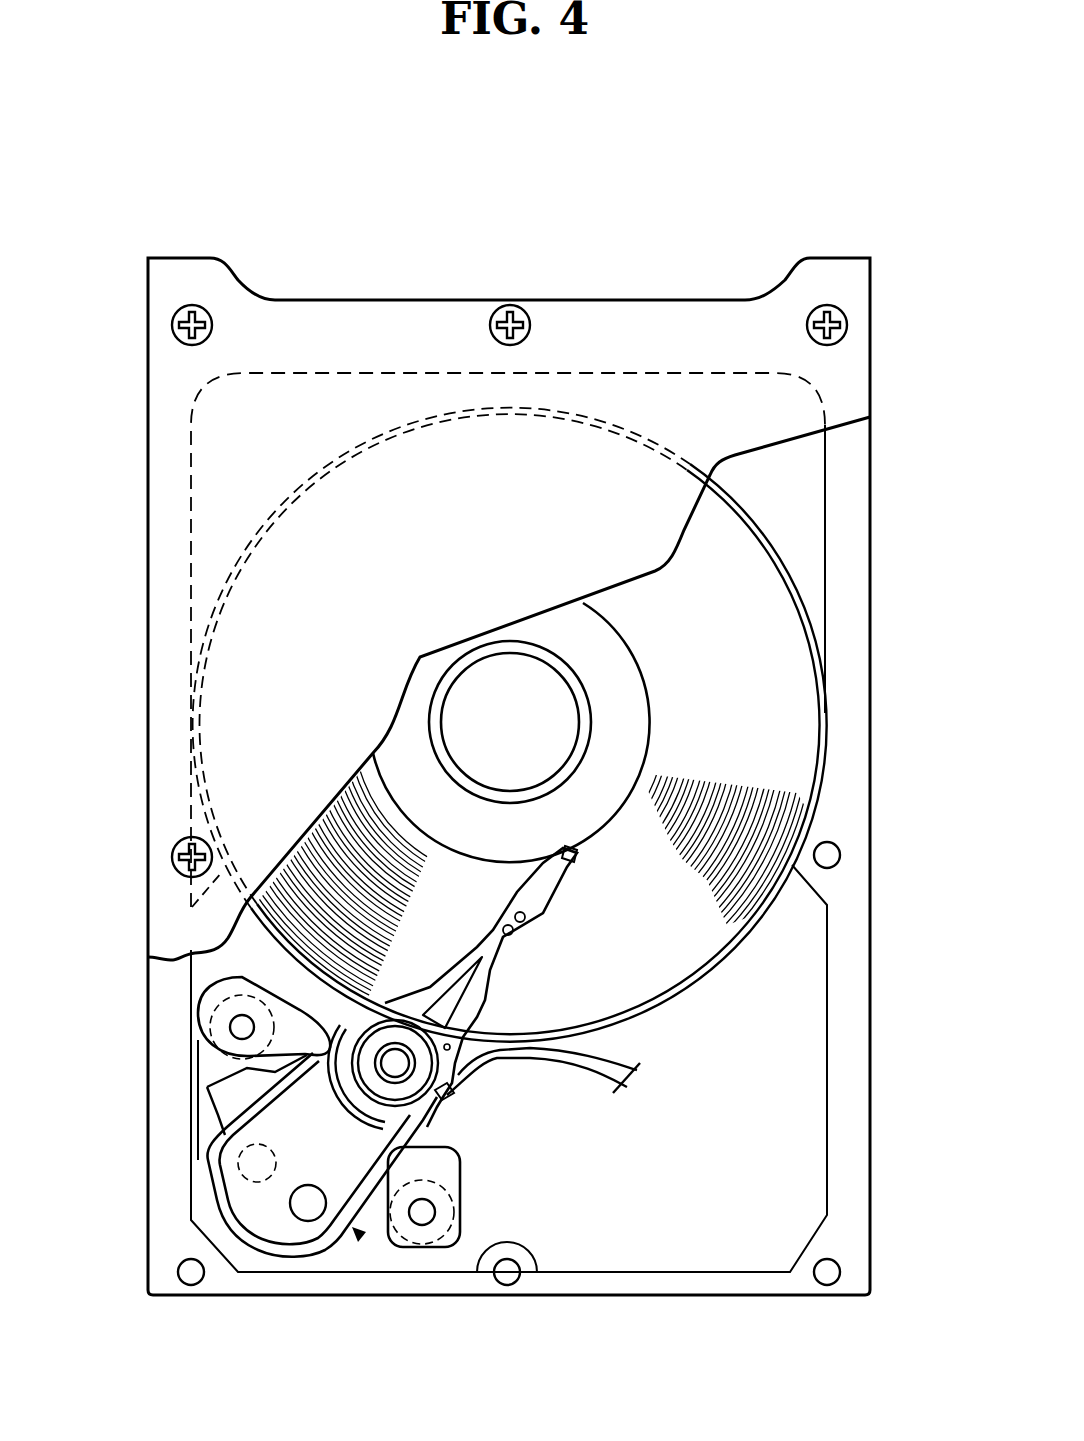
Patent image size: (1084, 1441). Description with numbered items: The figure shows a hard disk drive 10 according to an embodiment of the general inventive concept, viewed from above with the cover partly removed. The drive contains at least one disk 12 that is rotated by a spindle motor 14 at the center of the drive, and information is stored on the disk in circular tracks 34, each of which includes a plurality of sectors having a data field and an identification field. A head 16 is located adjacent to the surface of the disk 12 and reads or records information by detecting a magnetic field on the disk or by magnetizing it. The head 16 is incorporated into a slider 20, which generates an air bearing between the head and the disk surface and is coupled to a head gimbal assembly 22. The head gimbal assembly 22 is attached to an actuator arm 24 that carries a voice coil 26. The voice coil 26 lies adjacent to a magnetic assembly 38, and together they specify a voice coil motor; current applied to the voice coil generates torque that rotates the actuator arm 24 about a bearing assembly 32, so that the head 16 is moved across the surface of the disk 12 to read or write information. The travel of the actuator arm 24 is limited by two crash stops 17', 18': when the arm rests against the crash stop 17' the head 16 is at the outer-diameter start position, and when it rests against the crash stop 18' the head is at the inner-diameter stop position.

The hard disk drive 10 is at (657, 246).
The disk 12 is at (768, 645).
The spindle motor 14 is at (475, 690).
The head 16 is at (583, 860).
The crash stop 17' is at (202, 1060).
The crash stop 18' is at (446, 1253).
The slider 20 is at (547, 900).
The head gimbal assembly 22 is at (503, 1003).
The actuator arm 24 is at (300, 1085).
The voice coil 26 is at (367, 1240).
The bearing assembly 32 is at (413, 1070).
The tracks 34 is at (330, 883).
The magnetic assembly 38 is at (235, 1098).